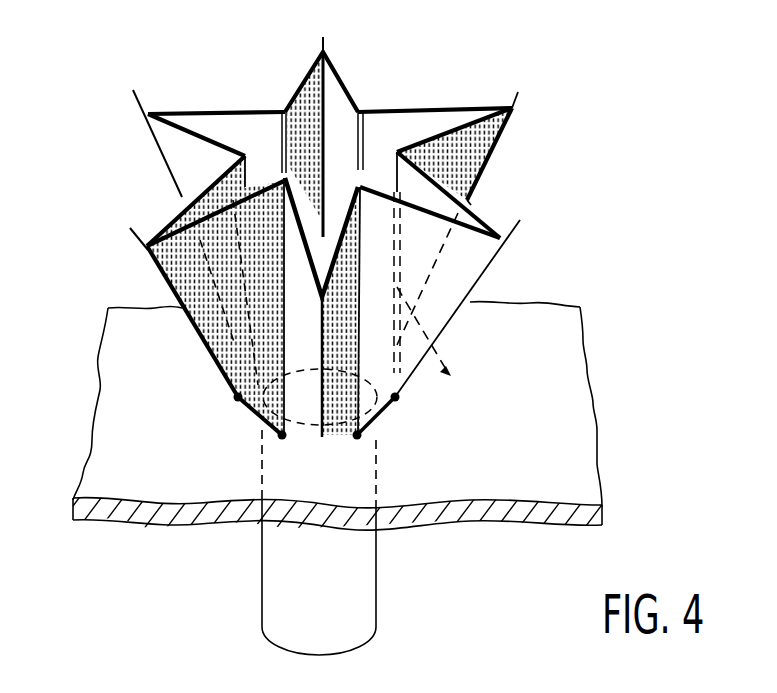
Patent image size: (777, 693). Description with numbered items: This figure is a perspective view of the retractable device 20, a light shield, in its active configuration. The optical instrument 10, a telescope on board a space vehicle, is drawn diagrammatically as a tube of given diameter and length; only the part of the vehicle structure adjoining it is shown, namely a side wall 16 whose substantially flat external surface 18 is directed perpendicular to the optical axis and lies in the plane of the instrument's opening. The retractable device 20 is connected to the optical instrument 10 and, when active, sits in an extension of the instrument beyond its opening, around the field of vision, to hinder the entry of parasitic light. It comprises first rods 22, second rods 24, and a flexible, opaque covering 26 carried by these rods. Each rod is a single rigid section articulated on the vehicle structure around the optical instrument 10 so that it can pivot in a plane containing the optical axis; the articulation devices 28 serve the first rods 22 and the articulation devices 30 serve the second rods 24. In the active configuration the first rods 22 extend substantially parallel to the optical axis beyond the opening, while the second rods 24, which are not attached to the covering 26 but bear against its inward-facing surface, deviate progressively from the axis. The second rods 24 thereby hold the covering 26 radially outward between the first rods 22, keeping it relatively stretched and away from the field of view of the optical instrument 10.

The optical instrument 10 is at (290, 597).
The side wall 16 is at (593, 517).
The external surface 18 is at (552, 322).
The retractable device 20 is at (550, 157).
The first rods 22 is at (280, 343).
The second rods 24 is at (323, 42).
The covering 26 is at (180, 157).
The articulation devices for the first rods 28 is at (357, 435).
The articulation devices for the second rods 30 is at (320, 438).